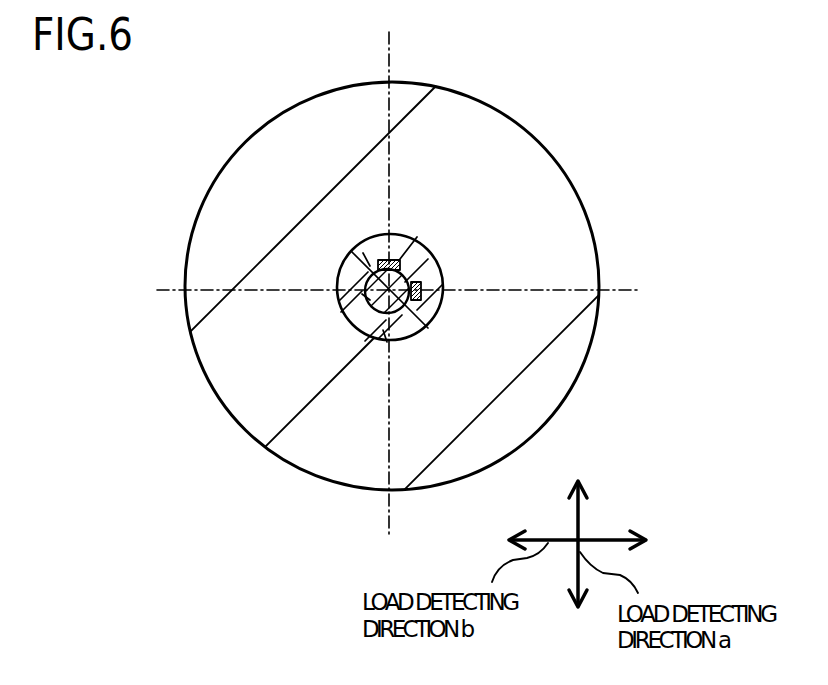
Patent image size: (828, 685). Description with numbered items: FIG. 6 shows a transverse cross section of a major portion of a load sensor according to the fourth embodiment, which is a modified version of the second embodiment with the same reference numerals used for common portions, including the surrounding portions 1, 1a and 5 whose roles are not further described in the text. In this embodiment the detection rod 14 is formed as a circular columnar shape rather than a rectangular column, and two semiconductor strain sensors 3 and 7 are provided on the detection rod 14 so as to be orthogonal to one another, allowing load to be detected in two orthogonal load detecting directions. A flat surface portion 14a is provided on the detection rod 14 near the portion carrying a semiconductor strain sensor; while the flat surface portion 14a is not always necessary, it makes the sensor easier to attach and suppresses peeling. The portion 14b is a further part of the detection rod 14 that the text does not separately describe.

The wheel body (tire/wheel) 1 is at (473, 157).
The hub portion 1a is at (430, 247).
The semiconductor strain sensor 3 is at (425, 283).
The spoke member 5 is at (363, 253).
The semiconductor strain sensor 7 is at (392, 258).
The detection rod 14 is at (377, 310).
The flat surface portion 14a is at (387, 342).
The side hole portion 14b is at (370, 300).